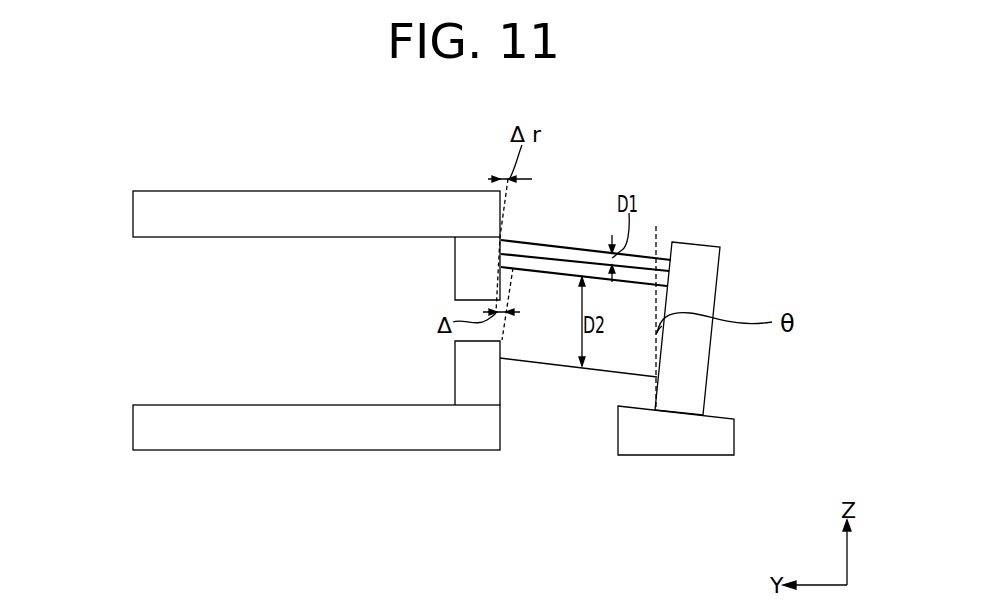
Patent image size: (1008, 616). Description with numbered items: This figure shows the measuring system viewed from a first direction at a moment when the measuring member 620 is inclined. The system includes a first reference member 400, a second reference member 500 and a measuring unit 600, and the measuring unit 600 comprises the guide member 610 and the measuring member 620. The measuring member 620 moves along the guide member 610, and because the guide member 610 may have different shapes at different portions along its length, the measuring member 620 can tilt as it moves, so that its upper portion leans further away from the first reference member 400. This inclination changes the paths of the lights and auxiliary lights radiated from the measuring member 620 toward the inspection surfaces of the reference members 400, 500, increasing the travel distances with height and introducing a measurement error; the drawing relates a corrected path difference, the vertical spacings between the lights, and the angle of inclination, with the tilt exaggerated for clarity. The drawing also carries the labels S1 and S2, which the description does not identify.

The first substrate S1 is at (147, 211).
The second substrate S2 is at (147, 430).
The first reference member 400 is at (448, 250).
The second reference member 500 is at (448, 387).
The measuring unit 600 is at (746, 348).
The guide member 610 is at (723, 435).
The measuring member 620 is at (688, 364).